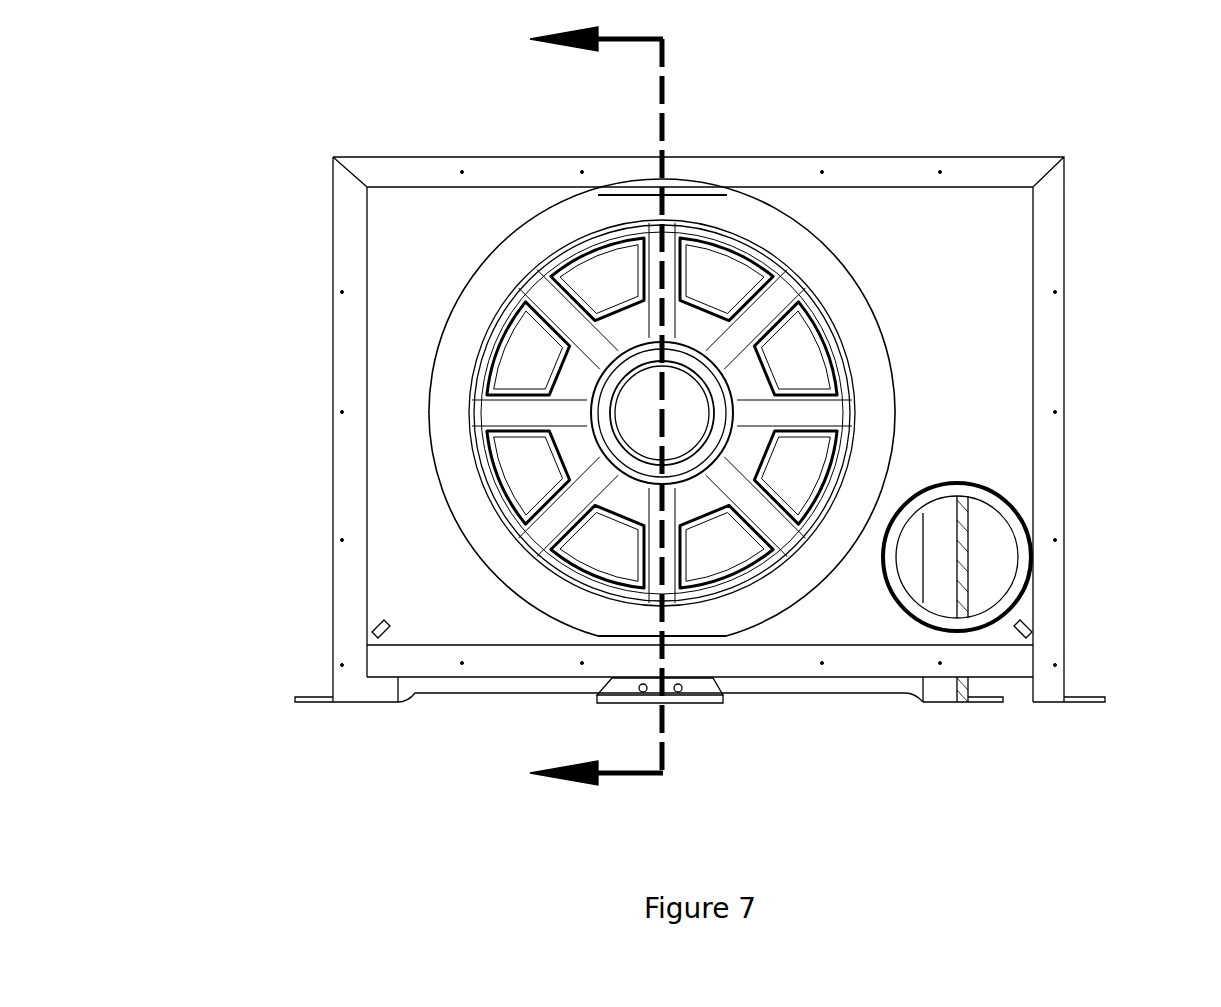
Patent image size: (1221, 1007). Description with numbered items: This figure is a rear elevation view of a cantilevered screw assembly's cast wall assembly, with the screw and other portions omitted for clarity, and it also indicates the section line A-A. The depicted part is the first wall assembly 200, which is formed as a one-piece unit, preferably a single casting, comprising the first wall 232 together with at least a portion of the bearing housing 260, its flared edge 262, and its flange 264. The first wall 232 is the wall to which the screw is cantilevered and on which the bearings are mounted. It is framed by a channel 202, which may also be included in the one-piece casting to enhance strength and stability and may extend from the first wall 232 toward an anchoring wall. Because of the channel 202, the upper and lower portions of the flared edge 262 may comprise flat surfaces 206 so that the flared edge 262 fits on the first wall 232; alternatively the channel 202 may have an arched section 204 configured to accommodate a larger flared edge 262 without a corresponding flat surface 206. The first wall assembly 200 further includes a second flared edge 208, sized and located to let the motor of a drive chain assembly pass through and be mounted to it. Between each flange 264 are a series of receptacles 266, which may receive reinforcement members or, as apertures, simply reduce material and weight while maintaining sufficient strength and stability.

The first wall assembly 200 is at (258, 133).
The channel 202 is at (1023, 167).
The arched section 204 is at (635, 178).
The flat surfaces 206 is at (685, 186).
The second flared edge 208 is at (1012, 512).
The first wall 232 is at (457, 622).
The bearing housing 260 is at (610, 444).
The flared edge 262 is at (745, 220).
The flange 264 is at (511, 410).
The receptacles 266 is at (799, 466).